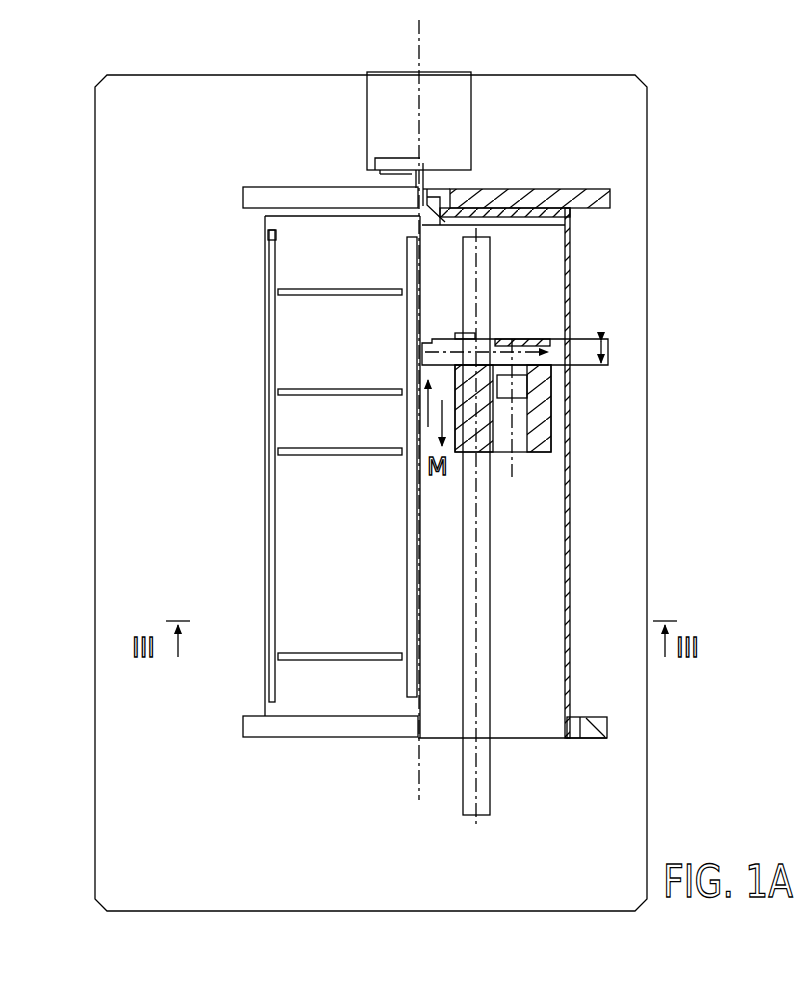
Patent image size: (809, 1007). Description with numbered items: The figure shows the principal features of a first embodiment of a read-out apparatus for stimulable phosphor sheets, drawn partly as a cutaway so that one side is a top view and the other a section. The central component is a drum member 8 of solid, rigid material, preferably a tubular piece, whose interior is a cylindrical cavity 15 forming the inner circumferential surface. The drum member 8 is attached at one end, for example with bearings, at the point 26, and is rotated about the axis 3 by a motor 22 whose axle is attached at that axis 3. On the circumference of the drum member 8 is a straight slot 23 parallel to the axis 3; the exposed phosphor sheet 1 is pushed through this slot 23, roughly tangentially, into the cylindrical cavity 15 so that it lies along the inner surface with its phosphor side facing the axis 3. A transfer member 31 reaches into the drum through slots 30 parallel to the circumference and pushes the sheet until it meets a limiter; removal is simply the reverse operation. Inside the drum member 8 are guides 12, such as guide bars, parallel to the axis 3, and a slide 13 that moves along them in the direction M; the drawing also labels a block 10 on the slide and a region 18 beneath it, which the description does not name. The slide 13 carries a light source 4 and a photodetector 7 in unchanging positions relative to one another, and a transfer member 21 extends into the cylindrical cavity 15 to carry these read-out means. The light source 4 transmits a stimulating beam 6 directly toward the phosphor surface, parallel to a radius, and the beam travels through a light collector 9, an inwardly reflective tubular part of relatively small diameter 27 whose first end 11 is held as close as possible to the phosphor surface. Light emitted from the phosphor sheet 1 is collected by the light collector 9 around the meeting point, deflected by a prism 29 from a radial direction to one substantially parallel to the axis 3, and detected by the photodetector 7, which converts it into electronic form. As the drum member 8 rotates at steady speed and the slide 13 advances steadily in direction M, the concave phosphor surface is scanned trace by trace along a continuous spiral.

The phosphor sheet 1 is at (262, 492).
The axis 3 is at (421, 52).
The light source 4 is at (433, 338).
The stimulating beam 6 is at (528, 338).
The photodetector 7 is at (529, 386).
The drum member 8 is at (339, 602).
The light collector 9 is at (548, 350).
The carriage block 10 is at (545, 425).
The first end of light collector 11 is at (556, 345).
The guides 12 is at (480, 775).
The slide 13 is at (535, 455).
The cylindrical cavity 15 is at (537, 661).
The recess 18 is at (514, 468).
The transfer member 21 is at (521, 544).
The motor 22 is at (403, 132).
The slot 23 is at (268, 672).
The attachment point 26 is at (459, 184).
The diameter 27 is at (617, 353).
The prism 29 is at (505, 338).
The slots 30 is at (330, 296).
The transfer member 31 is at (407, 253).